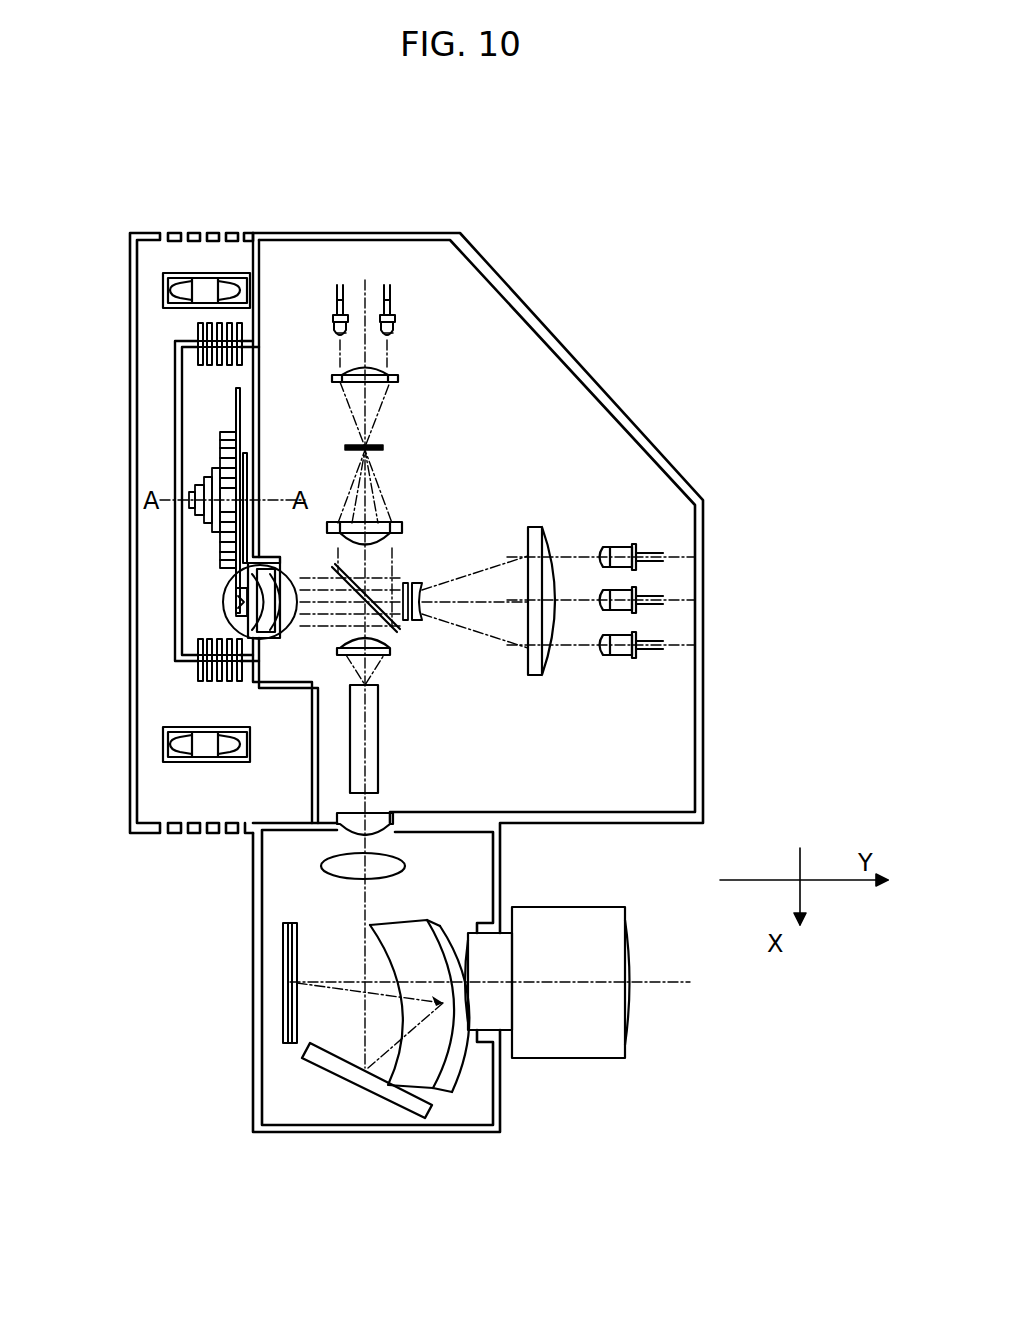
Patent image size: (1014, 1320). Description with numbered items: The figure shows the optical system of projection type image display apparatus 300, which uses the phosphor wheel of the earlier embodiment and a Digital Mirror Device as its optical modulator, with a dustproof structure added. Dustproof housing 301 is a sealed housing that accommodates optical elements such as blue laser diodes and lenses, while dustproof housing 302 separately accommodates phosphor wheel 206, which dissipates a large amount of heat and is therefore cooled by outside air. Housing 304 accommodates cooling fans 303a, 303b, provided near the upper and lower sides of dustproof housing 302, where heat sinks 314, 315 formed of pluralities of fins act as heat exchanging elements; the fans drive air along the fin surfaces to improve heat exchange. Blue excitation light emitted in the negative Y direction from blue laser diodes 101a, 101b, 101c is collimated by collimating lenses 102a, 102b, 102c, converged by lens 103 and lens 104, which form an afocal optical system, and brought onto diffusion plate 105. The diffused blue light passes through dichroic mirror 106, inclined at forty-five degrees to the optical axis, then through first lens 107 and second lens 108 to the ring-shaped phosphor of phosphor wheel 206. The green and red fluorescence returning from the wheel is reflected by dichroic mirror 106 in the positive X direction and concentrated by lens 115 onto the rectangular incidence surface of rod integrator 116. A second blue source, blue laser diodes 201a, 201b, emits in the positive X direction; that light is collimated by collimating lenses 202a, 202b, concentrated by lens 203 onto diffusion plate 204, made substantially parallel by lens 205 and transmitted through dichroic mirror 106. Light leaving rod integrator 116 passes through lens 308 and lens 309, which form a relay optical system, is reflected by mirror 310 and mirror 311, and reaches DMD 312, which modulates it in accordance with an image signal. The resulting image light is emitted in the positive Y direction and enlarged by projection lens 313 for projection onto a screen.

The projection type image display apparatus 300 is at (821, 287).
The dustproof housing 301 is at (633, 420).
The dustproof housing 302 is at (175, 595).
The cooling fan 303a is at (163, 745).
The cooling fan 303b is at (163, 286).
The housing 304 is at (177, 505).
The phosphor wheel 206 is at (198, 443).
The heat sink 314 is at (197, 665).
The heat sink 315 is at (195, 332).
The blue laser diode 201a is at (334, 317).
The blue laser diode 201b is at (393, 315).
The collimating lens 202a is at (337, 340).
The collimating lens 202b is at (390, 338).
The lens 203 is at (398, 378).
The diffusion plate 204 is at (384, 447).
The lens 205 is at (402, 527).
The second lens 108 is at (280, 576).
The first lens 107 is at (287, 617).
The dichroic mirror 106 is at (396, 634).
The diffusion plate 105 is at (412, 624).
The lens 104 is at (427, 622).
The lens 103 is at (545, 527).
The blue laser diode 101a is at (636, 545).
The blue laser diode 101b is at (637, 613).
The blue laser diode 101c is at (637, 658).
The collimating lens 102a is at (598, 548).
The collimating lens 102b is at (598, 608).
The collimating lens 102c is at (605, 656).
The lens 115 is at (362, 660).
The rod integrator 116 is at (380, 786).
The lens 308 is at (336, 838).
The lens 309 is at (328, 868).
The mirror 310 is at (367, 1096).
The mirror 311 is at (452, 1070).
The DMD 312 is at (287, 1005).
The projection lens 313 is at (615, 1060).